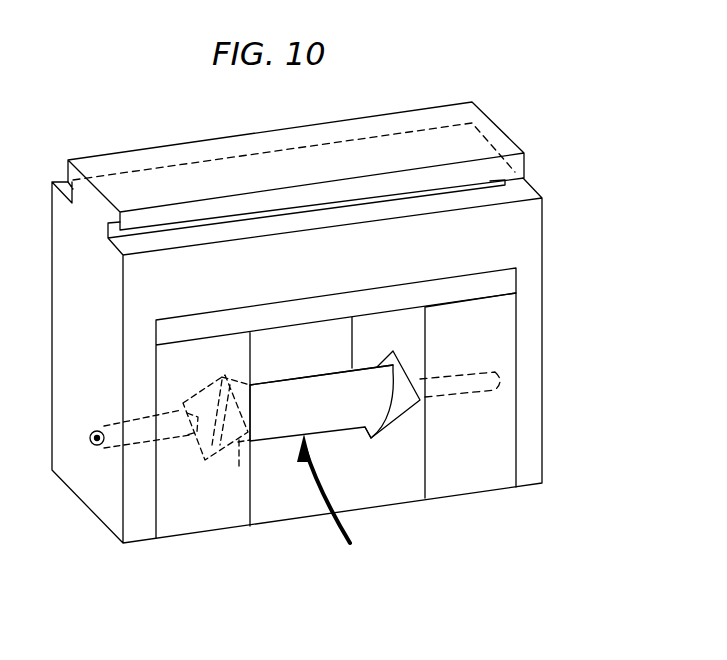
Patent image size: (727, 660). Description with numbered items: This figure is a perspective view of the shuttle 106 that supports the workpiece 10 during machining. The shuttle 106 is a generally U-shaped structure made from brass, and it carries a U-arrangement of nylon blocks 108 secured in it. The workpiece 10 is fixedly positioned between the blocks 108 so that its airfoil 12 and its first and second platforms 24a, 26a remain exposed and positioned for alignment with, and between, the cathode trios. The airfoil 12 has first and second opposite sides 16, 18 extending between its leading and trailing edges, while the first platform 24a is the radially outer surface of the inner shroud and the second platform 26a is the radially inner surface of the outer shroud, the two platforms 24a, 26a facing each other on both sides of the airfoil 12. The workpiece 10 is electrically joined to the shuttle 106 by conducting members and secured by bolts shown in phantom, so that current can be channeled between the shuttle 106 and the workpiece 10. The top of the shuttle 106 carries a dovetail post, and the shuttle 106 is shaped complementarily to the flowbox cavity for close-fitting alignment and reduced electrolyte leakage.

The workpiece 10 is at (341, 497).
The airfoil 12 is at (322, 418).
The first side 16 is at (295, 395).
The second side 18 is at (267, 402).
The first platform 24a is at (397, 402).
The second platform 26a is at (239, 470).
The shuttle 106 is at (547, 243).
The nylon blocks 108 is at (470, 483).